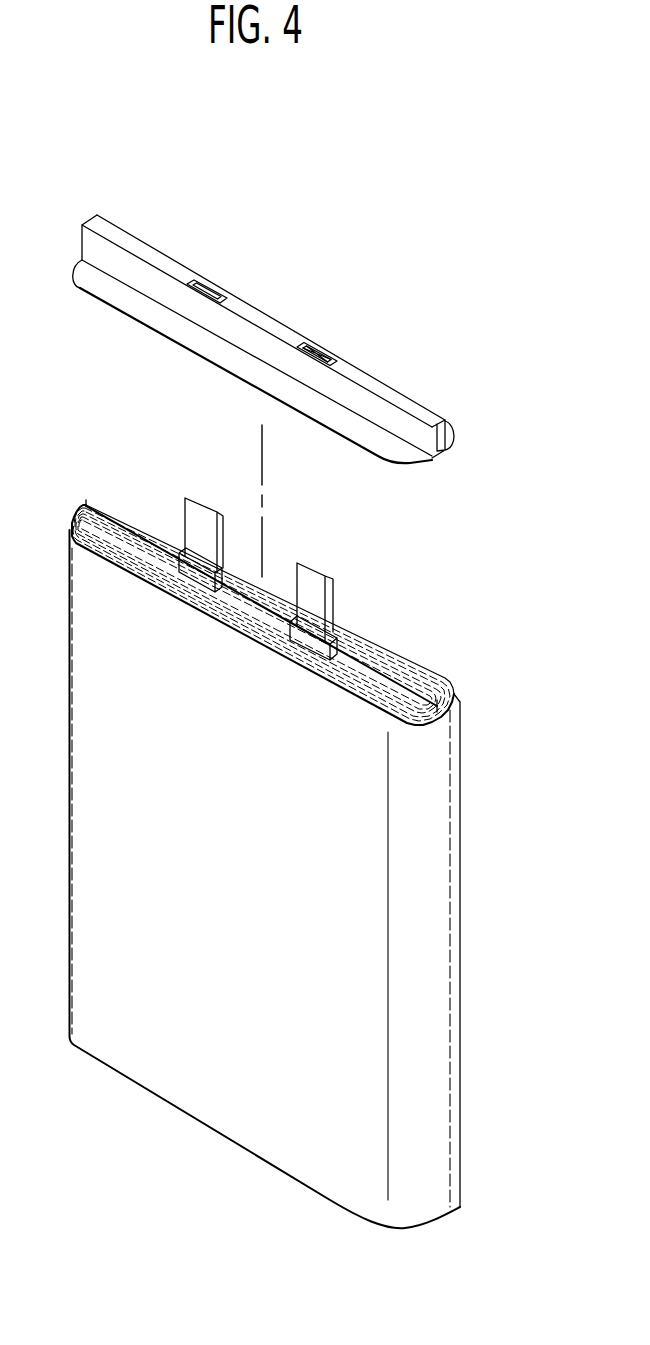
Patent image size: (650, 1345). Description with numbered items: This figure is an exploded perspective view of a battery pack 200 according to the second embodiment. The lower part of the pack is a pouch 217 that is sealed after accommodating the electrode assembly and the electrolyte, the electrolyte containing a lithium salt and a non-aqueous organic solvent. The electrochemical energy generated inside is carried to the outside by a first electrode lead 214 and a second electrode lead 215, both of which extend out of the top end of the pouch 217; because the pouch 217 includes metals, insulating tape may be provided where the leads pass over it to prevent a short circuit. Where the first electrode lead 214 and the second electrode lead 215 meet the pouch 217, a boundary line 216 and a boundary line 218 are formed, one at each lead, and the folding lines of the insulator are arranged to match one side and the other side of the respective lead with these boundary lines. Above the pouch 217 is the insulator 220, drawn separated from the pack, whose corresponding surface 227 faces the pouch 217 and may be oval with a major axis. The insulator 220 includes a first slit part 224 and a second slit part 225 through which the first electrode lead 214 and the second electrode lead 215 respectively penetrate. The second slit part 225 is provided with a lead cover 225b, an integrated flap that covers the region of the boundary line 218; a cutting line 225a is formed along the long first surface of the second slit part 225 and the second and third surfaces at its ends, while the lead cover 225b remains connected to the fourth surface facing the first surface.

The battery pack 200 is at (75, 140).
The first electrode lead 214 is at (202, 522).
The second electrode lead 215 is at (313, 583).
The boundary line 216 is at (145, 512).
The pouch 217 is at (454, 836).
The boundary line 218 is at (312, 623).
The insulator 220 is at (290, 310).
The first slit part 224 is at (213, 292).
The second slit part 225 is at (296, 337).
The cutting line 225a is at (333, 346).
The lead cover 225b is at (303, 343).
The corresponding surface 227 is at (367, 440).